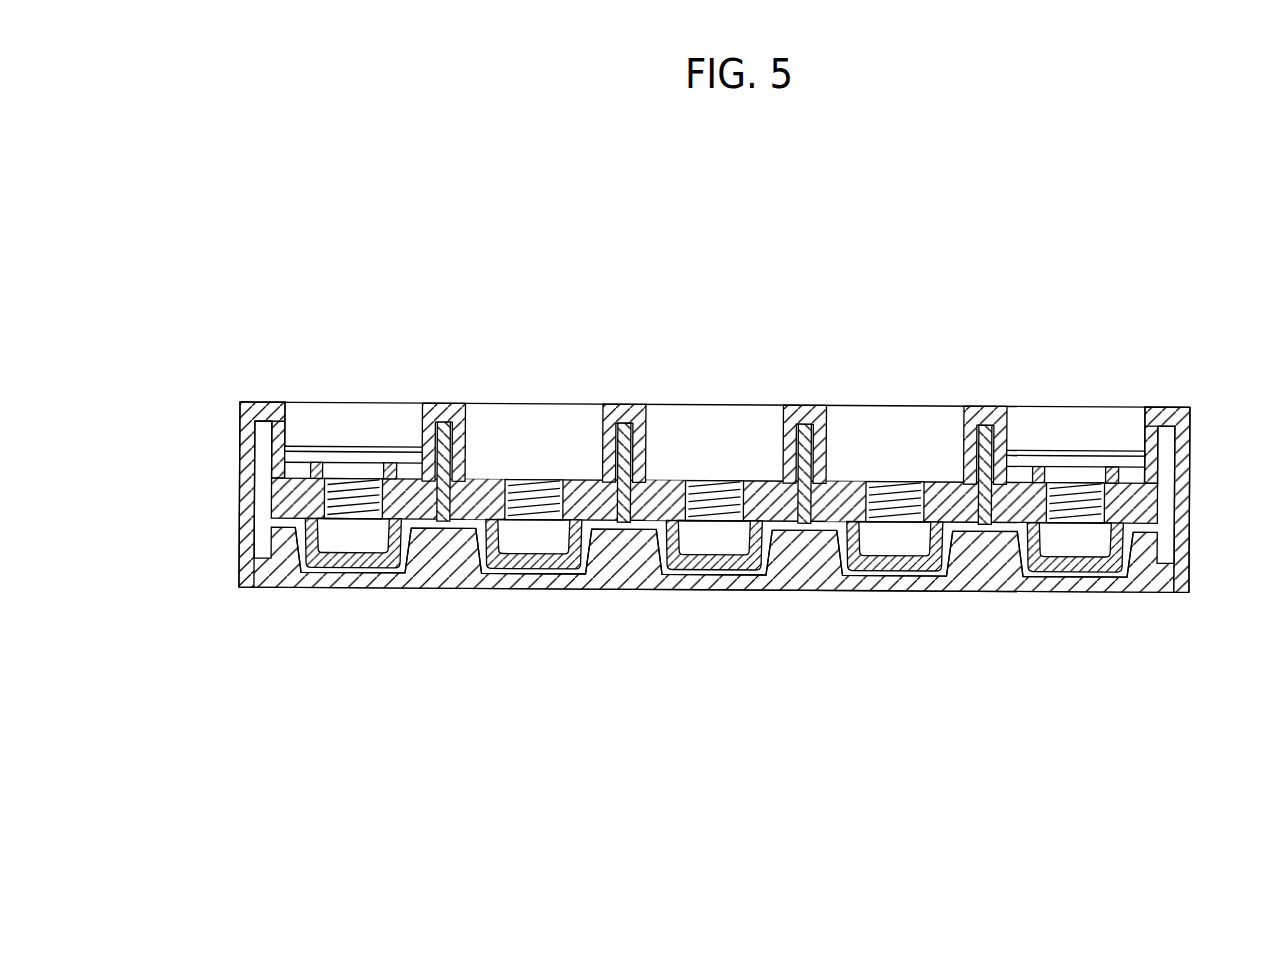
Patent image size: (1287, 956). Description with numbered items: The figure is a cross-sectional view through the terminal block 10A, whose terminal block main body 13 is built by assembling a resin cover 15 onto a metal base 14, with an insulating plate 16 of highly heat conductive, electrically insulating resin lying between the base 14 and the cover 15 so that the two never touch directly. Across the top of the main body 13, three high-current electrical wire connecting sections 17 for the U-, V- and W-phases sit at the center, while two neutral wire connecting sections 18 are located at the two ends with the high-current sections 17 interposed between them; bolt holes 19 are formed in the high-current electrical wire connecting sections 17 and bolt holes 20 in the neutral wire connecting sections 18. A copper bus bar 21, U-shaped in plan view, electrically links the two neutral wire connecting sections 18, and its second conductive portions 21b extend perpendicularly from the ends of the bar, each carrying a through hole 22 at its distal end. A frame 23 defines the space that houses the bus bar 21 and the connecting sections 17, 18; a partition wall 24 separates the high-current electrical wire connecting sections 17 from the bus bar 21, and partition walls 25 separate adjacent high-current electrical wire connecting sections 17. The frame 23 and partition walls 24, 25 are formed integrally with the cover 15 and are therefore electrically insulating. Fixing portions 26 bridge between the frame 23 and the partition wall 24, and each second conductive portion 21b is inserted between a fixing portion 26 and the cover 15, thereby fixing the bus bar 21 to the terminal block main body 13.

The terminal block 10A is at (1127, 331).
The terminal block main body 13 is at (233, 421).
The base 14 is at (1141, 583).
The cover 15 is at (1180, 483).
The insulating plate 16 is at (330, 570).
The high-current electrical wire connecting section 17 is at (484, 484).
The neutral wire connecting section 18 is at (278, 499).
The bolt hole 19 is at (547, 484).
The bolt hole 20 is at (365, 522).
The bus bar 21 is at (311, 464).
The second conductive portion 21b is at (315, 445).
The through hole 22 is at (383, 457).
The frame 23 is at (259, 402).
The partition wall 24 is at (440, 402).
The partition wall 25 is at (627, 403).
The fixing portion 26 is at (355, 452).